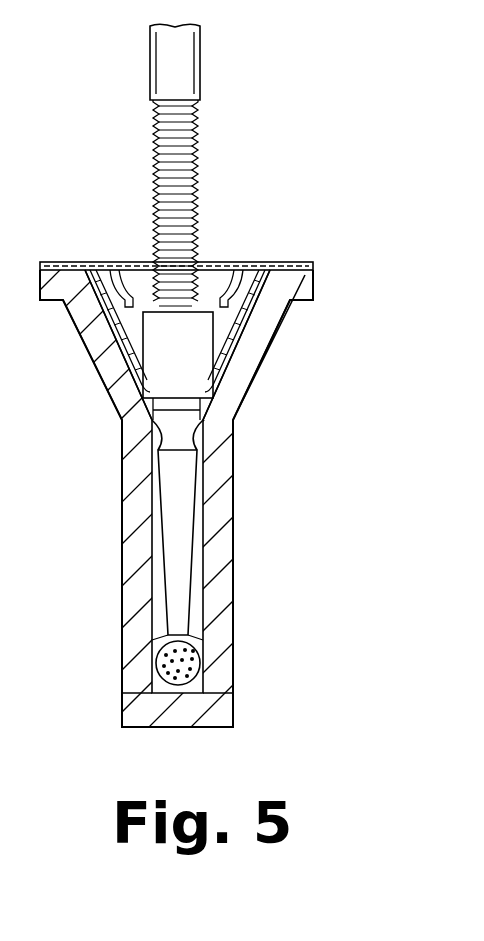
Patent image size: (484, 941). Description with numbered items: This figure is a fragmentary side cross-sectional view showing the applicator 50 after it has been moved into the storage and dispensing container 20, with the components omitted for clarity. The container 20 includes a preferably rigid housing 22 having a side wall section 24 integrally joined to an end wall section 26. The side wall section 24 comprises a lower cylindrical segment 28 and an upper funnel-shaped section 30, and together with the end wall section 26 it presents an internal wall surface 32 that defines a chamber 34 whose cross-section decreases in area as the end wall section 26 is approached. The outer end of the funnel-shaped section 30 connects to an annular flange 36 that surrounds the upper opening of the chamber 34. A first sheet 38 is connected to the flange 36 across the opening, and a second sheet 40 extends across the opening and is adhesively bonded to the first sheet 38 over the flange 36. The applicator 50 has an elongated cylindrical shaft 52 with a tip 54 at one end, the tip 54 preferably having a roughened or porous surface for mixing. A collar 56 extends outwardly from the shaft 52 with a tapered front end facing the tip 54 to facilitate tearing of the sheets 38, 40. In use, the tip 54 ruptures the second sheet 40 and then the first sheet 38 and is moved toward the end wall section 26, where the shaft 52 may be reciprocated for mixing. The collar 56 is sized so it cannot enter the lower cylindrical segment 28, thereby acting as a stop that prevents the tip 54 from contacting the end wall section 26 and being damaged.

The storage and dispensing container 20 is at (276, 470).
The housing 22 is at (238, 496).
The side wall section 24 is at (233, 581).
The end wall section 26 is at (155, 727).
The lower cylindrical segment 28 is at (233, 665).
The upper funnel-shaped section 30 is at (85, 350).
The internal wall surface 32 is at (150, 478).
The chamber 34 is at (150, 631).
The flange 36 is at (300, 300).
The first sheet 38 is at (233, 350).
The second sheet 40 is at (252, 264).
The applicator 50 is at (214, 49).
The shaft 52 is at (180, 80).
The tip 54 is at (178, 665).
The collar 56 is at (222, 397).